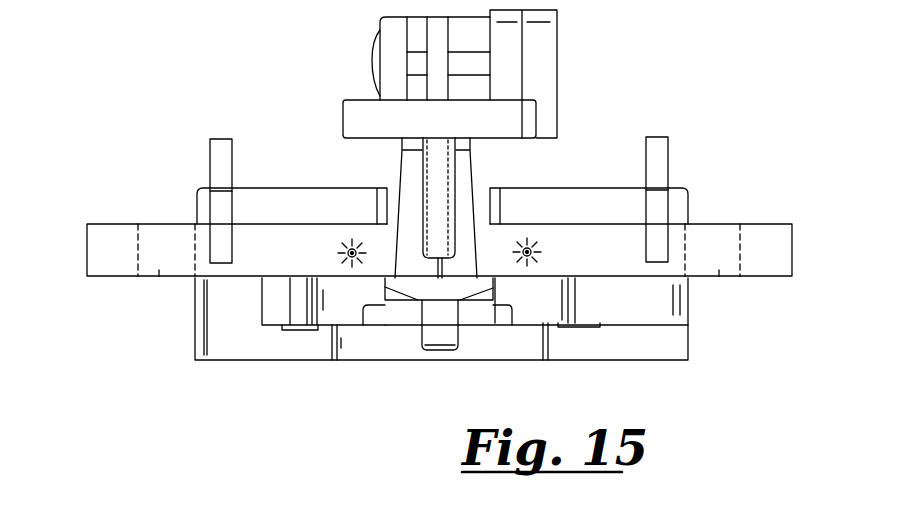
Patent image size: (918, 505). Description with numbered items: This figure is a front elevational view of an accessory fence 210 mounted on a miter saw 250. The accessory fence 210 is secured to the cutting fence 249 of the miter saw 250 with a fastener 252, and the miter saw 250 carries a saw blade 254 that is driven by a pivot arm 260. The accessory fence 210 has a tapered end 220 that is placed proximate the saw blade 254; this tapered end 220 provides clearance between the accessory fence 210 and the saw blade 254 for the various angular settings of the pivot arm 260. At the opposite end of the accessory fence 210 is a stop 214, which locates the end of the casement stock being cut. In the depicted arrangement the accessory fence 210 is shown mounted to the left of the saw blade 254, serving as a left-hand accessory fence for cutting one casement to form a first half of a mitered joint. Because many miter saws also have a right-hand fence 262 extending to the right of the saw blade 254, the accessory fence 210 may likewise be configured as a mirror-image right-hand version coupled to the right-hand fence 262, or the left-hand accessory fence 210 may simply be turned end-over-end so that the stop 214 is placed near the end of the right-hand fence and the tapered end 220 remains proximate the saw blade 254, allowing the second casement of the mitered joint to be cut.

The accessory fence 210 is at (83, 246).
The stop 214 is at (159, 282).
The tapered end 220 is at (385, 243).
The cutting fence 249 is at (299, 212).
The miter saw 250 is at (613, 63).
The fastener 252 is at (210, 158).
The saw blade 254 is at (440, 262).
The pivot arm 260 is at (425, 340).
The right-hand fence 262 is at (578, 198).